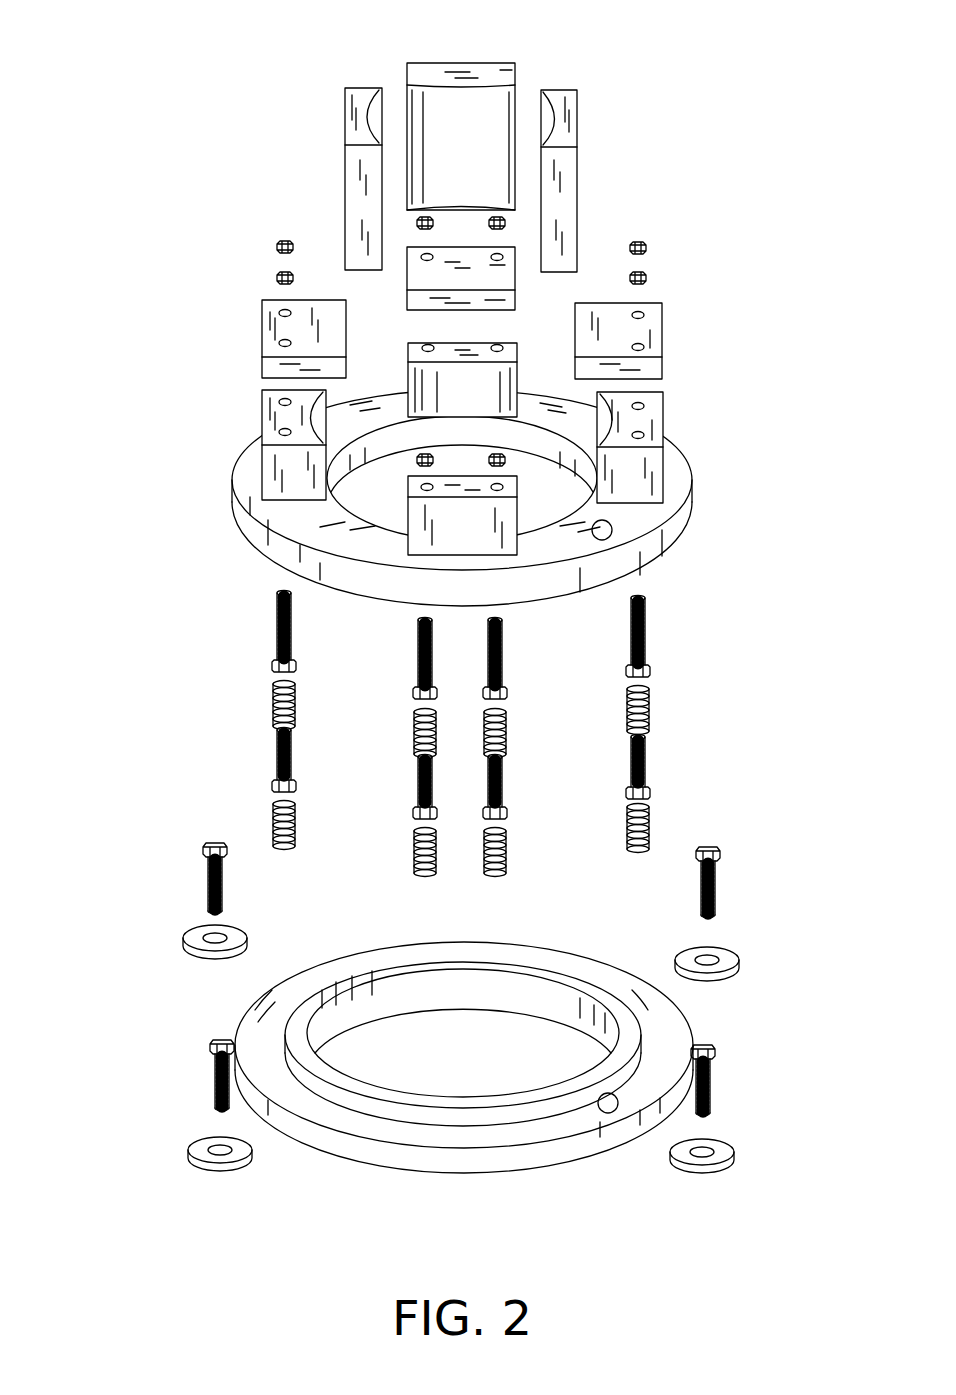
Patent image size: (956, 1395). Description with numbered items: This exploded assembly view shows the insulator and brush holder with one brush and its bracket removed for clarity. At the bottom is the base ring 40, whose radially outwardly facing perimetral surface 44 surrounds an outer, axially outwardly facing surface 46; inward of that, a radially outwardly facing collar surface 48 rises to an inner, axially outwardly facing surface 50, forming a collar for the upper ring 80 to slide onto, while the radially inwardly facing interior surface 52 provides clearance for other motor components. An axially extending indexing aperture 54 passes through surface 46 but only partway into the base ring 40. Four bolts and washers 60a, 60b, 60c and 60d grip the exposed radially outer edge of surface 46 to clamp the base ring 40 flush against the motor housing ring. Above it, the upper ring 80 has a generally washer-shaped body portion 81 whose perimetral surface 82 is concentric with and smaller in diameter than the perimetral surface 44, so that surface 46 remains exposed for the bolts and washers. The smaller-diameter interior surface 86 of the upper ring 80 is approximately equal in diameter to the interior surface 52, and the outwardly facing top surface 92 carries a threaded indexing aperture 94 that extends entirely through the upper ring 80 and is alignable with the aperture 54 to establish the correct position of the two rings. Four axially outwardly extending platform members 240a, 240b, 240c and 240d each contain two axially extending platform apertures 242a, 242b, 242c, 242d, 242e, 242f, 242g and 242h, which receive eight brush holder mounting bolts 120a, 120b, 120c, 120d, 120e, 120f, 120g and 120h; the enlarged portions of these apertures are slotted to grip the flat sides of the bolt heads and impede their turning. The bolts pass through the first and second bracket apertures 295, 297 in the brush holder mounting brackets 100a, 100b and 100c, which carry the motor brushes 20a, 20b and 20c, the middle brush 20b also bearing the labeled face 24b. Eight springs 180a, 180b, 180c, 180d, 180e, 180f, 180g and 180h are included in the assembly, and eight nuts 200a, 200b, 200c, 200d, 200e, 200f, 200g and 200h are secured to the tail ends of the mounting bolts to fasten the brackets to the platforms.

The motor brush 20a is at (580, 155).
The motor brush 20b is at (472, 90).
The motor brush 20c is at (350, 122).
The concave inner face of window block 24b is at (493, 110).
The base ring 40 is at (473, 1178).
The perimetral surface 44 is at (317, 1130).
The axially outwardly facing surface 46 is at (372, 1123).
The collar surface 48 is at (432, 1110).
The inner axially outwardly facing surface 50 is at (582, 1080).
The interior surface 52 is at (494, 984).
The indexing/mounting bolt receiving aperture 54 is at (611, 1112).
The bolt and washer 60a is at (730, 918).
The bolt and washer 60b is at (195, 912).
The bolt and washer 60c is at (190, 1128).
The bolt and washer 60d is at (730, 1113).
The upper ring 80 is at (778, 397).
The body portion 81 is at (717, 498).
The perimetral surface 82 is at (283, 560).
The interior surface 86 is at (397, 428).
The top surface 92 is at (277, 517).
The indexing/mounting bolt receiving aperture 94 is at (612, 530).
The brush holder mounting bracket 100a is at (650, 325).
The brush holder mounting bracket 100b is at (417, 273).
The brush holder mounting bracket 100c is at (275, 330).
The brush holder mounting bolt 120a is at (646, 771).
The brush holder mounting bolt 120b is at (646, 647).
The brush holder mounting bolt 120c is at (503, 663).
The brush holder mounting bolt 120d is at (418, 668).
The brush holder mounting bolt 120e is at (277, 641).
The brush holder mounting bolt 120f is at (277, 763).
The brush holder mounting bolt 120g is at (418, 800).
The brush holder mounting bolt 120h is at (503, 792).
The spring 180a is at (650, 820).
The spring 180b is at (650, 706).
The spring 180c is at (507, 725).
The spring 180d is at (414, 722).
The spring 180e is at (273, 705).
The spring 180f is at (273, 816).
The spring 180g is at (414, 867).
The spring 180h is at (506, 864).
The nut 200a is at (646, 277).
The nut 200b is at (646, 247).
The nut 200c is at (506, 225).
The nut 200d is at (417, 224).
The nut 200e is at (277, 247).
The nut 200f is at (277, 278).
The nut 200g is at (417, 460).
The nut 200h is at (505, 461).
The platform member 240a is at (658, 462).
The platform member 240b is at (473, 353).
The platform member 240c is at (270, 420).
The platform member 240d is at (424, 550).
The platform aperture 242a is at (645, 434).
The platform aperture 242b is at (645, 405).
The platform aperture 242c is at (497, 352).
The platform aperture 242d is at (423, 348).
The platform aperture 242e is at (279, 401).
The platform aperture 242f is at (280, 433).
The platform aperture 242g is at (421, 488).
The platform aperture 242h is at (503, 488).
The first brush holder bracket aperture 295 is at (645, 313).
The second brush holder bracket aperture 297 is at (645, 349).